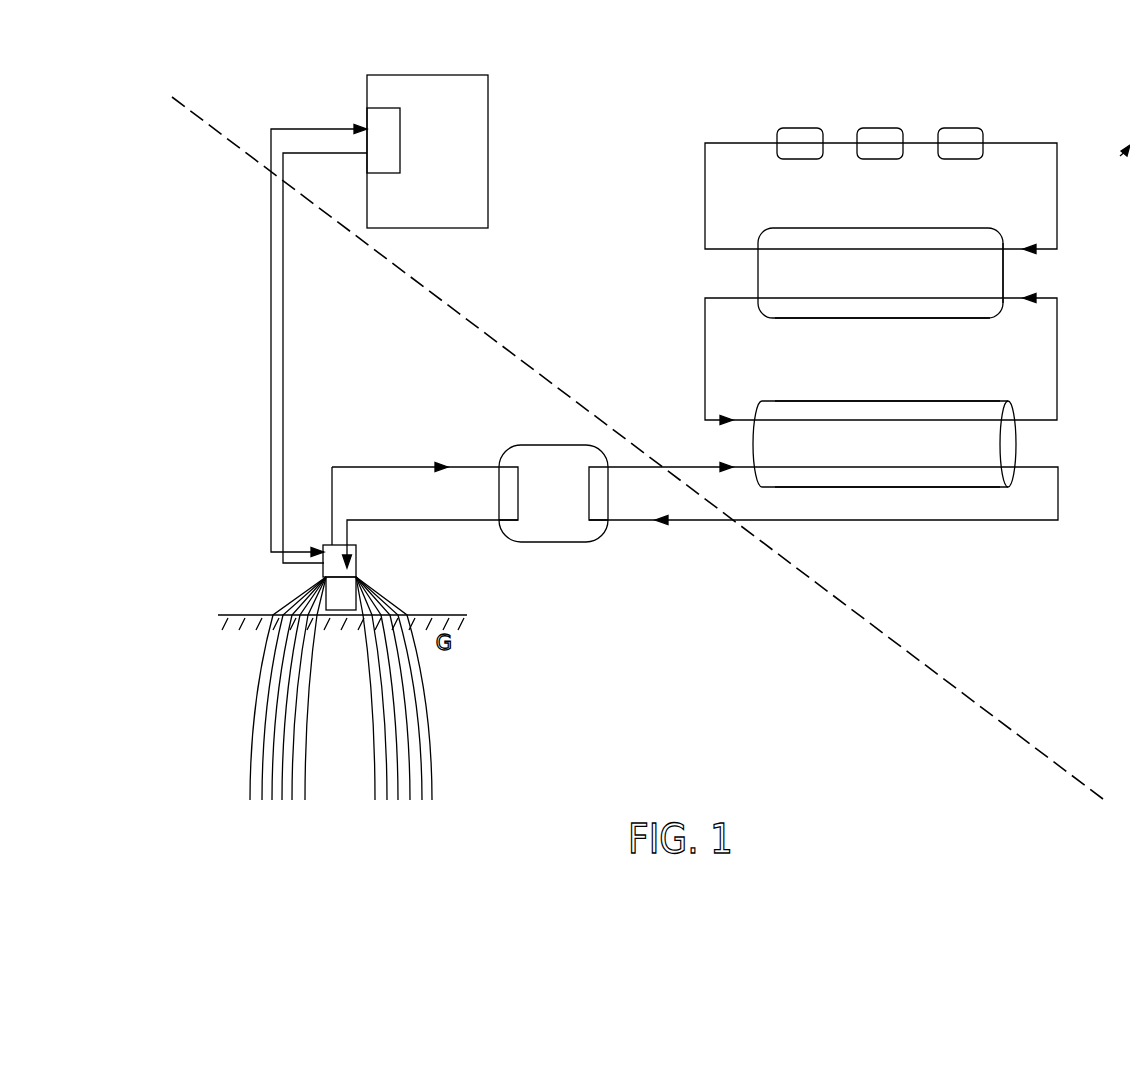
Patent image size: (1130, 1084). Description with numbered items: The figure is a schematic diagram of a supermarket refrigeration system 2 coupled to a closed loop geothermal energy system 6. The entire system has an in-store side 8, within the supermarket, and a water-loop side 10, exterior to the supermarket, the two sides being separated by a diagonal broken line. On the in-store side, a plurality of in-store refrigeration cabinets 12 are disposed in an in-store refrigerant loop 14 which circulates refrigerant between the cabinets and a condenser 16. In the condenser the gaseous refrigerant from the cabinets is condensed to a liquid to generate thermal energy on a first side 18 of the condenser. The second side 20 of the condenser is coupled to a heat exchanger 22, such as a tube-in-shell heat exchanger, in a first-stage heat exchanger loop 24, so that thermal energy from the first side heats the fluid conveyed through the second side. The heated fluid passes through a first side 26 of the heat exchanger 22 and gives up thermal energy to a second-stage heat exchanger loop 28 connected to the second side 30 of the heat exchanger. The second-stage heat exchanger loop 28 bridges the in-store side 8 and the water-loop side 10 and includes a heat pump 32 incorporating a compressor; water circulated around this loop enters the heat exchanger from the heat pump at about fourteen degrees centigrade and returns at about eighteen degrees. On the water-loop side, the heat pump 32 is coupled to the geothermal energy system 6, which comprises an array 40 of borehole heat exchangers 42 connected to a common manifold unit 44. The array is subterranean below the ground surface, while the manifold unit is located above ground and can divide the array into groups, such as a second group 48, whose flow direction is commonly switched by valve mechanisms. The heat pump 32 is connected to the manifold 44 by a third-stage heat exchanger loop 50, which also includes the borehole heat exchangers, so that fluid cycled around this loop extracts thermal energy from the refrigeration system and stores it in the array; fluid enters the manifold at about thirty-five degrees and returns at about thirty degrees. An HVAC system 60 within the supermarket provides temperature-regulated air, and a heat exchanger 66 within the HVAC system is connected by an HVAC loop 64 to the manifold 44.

The refrigeration system 2 is at (1041, 129).
The closed loop geothermal energy system 6 is at (465, 711).
The in-store side 8 is at (1030, 650).
The water-loop side 10 is at (819, 718).
The in-store refrigeration cabinets 12 is at (802, 128).
The in-store refrigerant loop 14 is at (1060, 190).
The condenser 16 is at (885, 228).
The first side of the condenser 18 is at (980, 238).
The second side of the condenser 20 is at (928, 318).
The heat exchanger 22 is at (985, 401).
The first-stage heat exchanger loop 24 is at (1060, 378).
The first side of the heat exchanger 26 is at (858, 408).
The second-stage heat exchanger loop 28 is at (1060, 497).
The second side of the heat exchanger 30 is at (955, 478).
The heat pump 32 is at (555, 543).
The array of borehole heat exchangers 40 is at (266, 598).
The borehole heat exchangers 42 is at (256, 684).
The common manifold unit 44 is at (336, 604).
The second group 48 is at (372, 710).
The third-stage heat exchanger loop 50 is at (412, 465).
The HVAC system 60 is at (489, 155).
The HVAC loop 64 is at (284, 258).
The heat exchanger within the HVAC system 66 is at (373, 163).